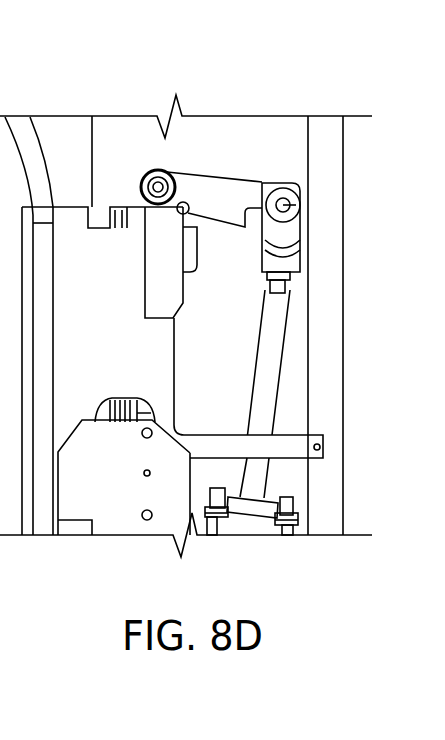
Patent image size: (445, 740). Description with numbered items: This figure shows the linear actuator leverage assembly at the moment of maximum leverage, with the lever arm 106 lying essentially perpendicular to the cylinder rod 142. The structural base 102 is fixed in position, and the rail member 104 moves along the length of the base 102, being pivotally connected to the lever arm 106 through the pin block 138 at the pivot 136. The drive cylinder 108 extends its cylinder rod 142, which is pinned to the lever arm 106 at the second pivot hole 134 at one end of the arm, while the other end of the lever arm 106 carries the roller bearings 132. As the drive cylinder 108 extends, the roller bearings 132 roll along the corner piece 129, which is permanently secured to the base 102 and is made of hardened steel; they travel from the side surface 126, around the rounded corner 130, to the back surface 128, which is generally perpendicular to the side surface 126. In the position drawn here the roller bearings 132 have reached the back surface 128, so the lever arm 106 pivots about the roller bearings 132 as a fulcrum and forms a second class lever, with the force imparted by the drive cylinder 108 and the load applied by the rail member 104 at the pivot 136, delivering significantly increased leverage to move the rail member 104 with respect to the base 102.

The structural base 102 is at (107, 388).
The rail member 104 is at (115, 488).
The lever arm 106 is at (236, 196).
The drive cylinder 108 is at (257, 523).
The side surface 126 is at (185, 262).
The back surface 128 is at (176, 207).
The corner piece 129 is at (162, 298).
The corner 130 is at (182, 213).
The roller bearings 132 is at (164, 170).
The second pivot hole 134 is at (285, 205).
The pivot 136 is at (258, 222).
The pin block 138 is at (190, 243).
The cylinder rod 142 is at (268, 378).